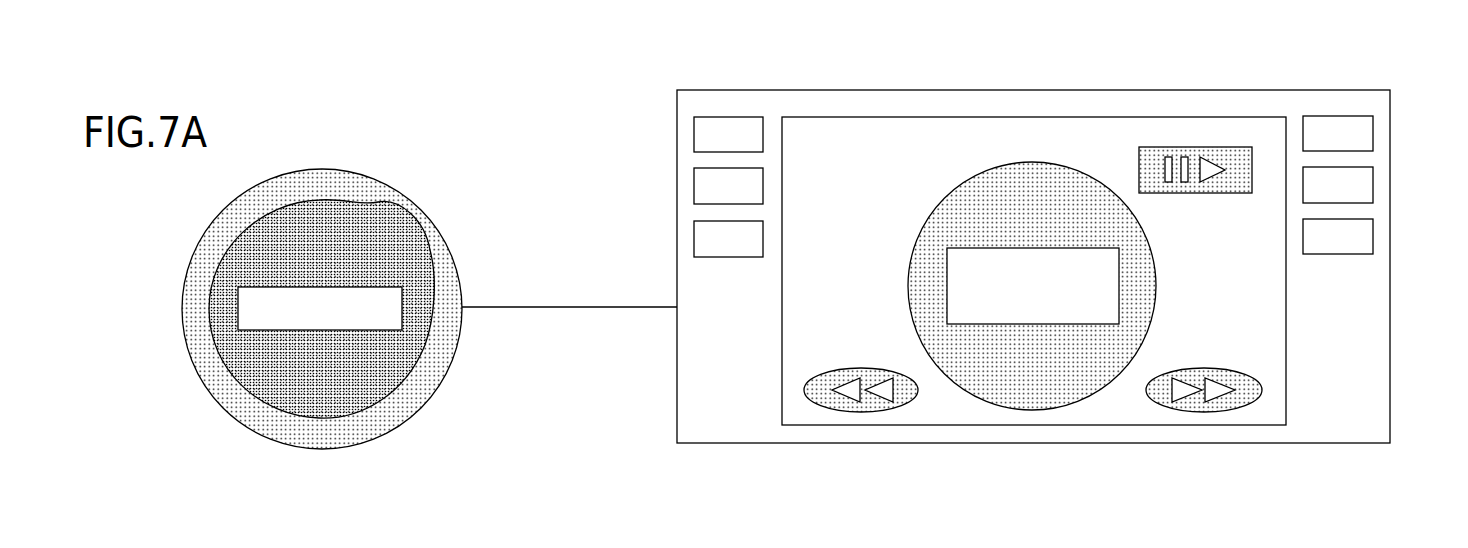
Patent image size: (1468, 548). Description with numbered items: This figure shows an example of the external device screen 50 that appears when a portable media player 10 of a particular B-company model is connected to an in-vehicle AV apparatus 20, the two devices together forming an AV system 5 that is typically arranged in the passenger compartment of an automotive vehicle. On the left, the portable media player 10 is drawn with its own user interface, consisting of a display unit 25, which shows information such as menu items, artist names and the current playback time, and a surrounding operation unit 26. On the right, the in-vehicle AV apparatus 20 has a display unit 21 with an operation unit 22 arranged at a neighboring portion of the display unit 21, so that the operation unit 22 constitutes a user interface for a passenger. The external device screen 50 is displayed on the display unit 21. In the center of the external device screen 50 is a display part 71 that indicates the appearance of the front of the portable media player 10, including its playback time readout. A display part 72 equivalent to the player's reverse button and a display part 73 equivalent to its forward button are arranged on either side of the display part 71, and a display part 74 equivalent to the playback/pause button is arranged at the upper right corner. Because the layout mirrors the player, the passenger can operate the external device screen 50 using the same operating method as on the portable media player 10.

The AV system 5 is at (570, 100).
The portable media player 10 is at (350, 282).
The in-vehicle AV apparatus 20 is at (917, 84).
The display unit 21 is at (842, 115).
The operation unit 22 is at (694, 238).
The display unit 25 is at (400, 307).
The operation unit 26 is at (447, 218).
The external device screen 50 is at (1033, 255).
The display part 71 is at (1036, 410).
The display part 72 is at (858, 413).
The display part 73 is at (1205, 413).
The display part 74 is at (1205, 145).